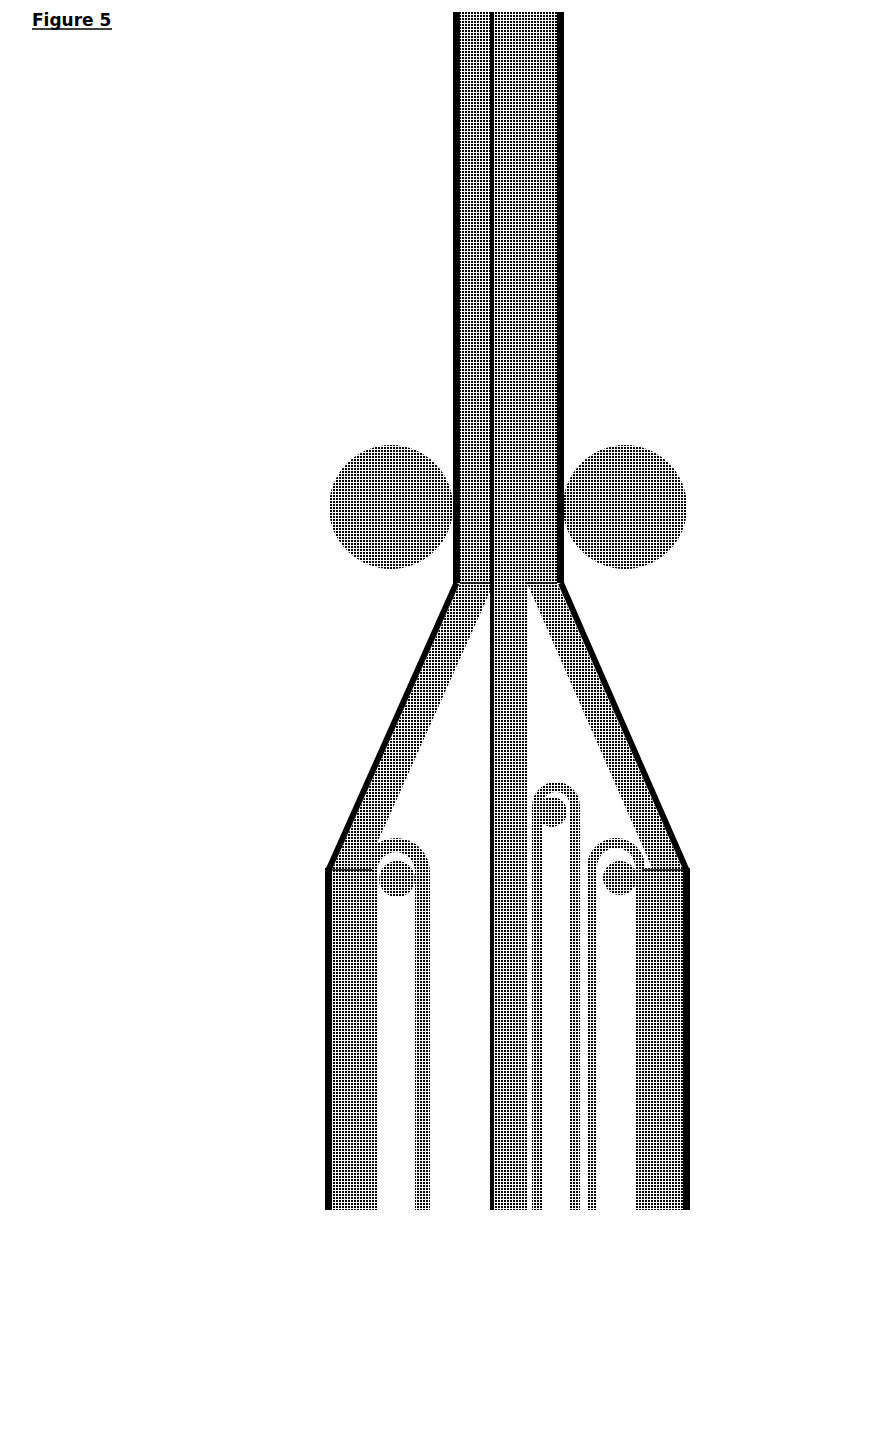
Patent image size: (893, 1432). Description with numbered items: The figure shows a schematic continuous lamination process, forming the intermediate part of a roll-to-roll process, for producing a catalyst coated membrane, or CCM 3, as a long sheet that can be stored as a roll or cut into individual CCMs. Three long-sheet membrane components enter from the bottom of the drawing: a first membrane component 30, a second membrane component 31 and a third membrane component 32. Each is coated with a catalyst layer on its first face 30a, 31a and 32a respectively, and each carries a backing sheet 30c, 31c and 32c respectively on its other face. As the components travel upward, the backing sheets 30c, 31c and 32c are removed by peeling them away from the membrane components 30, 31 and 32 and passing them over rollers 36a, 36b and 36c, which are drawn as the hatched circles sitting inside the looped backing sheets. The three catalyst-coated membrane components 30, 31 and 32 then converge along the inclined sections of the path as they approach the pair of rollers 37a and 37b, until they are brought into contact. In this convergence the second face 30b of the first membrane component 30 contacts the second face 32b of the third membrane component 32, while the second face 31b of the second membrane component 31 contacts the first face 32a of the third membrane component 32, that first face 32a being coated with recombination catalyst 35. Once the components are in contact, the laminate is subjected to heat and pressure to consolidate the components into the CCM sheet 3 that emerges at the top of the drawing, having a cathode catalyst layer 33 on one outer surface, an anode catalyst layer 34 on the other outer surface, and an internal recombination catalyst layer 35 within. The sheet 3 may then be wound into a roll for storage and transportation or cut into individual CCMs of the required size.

The catalyst coated membrane 3 is at (365, 163).
The roller 37a is at (632, 505).
The roller 37b is at (393, 505).
The recombination catalyst layer 35 is at (487, 685).
The anode catalyst layer 34 is at (406, 686).
The second face of second membrane component 31b is at (412, 748).
The second face of third membrane component 32b is at (522, 670).
The second face of first membrane component 30b is at (577, 708).
The cathode catalyst layer 33 is at (633, 747).
The roller 36a is at (612, 879).
The roller 36b is at (557, 810).
The roller 36c is at (379, 878).
The first face of second membrane component 31a is at (323, 1152).
The second membrane component 31 is at (341, 1160).
The backing sheet 31c is at (374, 1128).
The first face of third membrane component 32a is at (482, 1160).
The third membrane component 32 is at (503, 1165).
The backing sheet 32c is at (533, 1142).
The backing sheet 30c is at (638, 1150).
The first membrane component 30 is at (663, 1172).
The first face of first membrane component 30a is at (688, 1160).